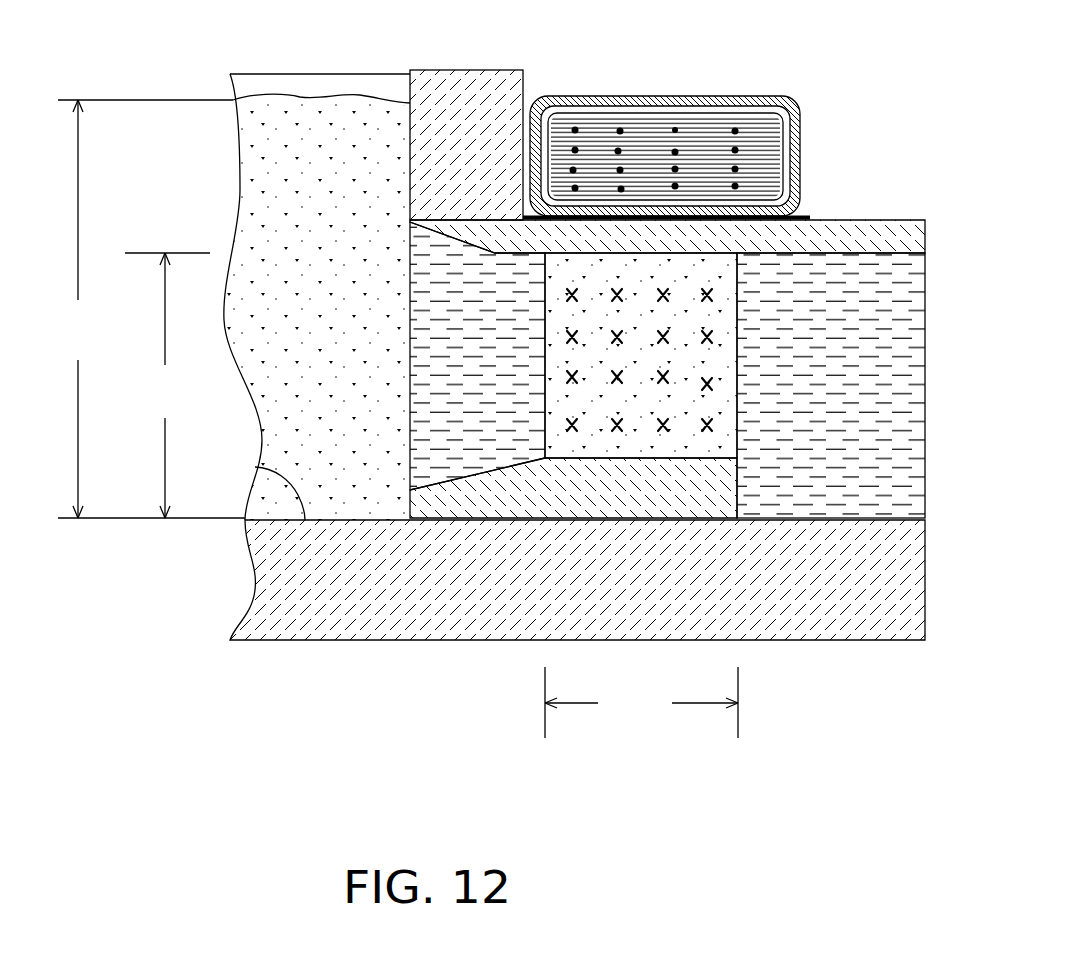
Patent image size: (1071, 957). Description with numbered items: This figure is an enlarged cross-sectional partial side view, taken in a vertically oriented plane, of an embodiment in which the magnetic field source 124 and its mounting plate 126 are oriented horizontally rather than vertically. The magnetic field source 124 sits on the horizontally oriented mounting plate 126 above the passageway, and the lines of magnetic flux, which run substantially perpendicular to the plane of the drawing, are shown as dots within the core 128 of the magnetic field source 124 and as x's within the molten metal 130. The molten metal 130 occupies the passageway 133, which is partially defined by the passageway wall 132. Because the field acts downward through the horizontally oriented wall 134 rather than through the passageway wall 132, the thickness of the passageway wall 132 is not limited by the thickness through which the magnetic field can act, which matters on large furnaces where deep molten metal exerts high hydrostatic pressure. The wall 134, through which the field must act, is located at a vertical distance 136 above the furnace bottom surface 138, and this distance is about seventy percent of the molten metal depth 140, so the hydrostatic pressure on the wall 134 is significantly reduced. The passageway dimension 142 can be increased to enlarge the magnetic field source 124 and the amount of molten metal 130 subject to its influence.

The magnetic field source 124 is at (665, 116).
The mounting plate 126 is at (797, 217).
The core 128 is at (625, 159).
The molten metal 130 is at (656, 283).
The passageway wall 132 is at (783, 404).
The passageway 133 is at (670, 318).
The wall 134 is at (615, 246).
The vertical distance 136 is at (167, 385).
The furnace bottom surface 138 is at (255, 467).
The molten metal depth 140 is at (151, 309).
The passageway dimension 142 is at (641, 702).